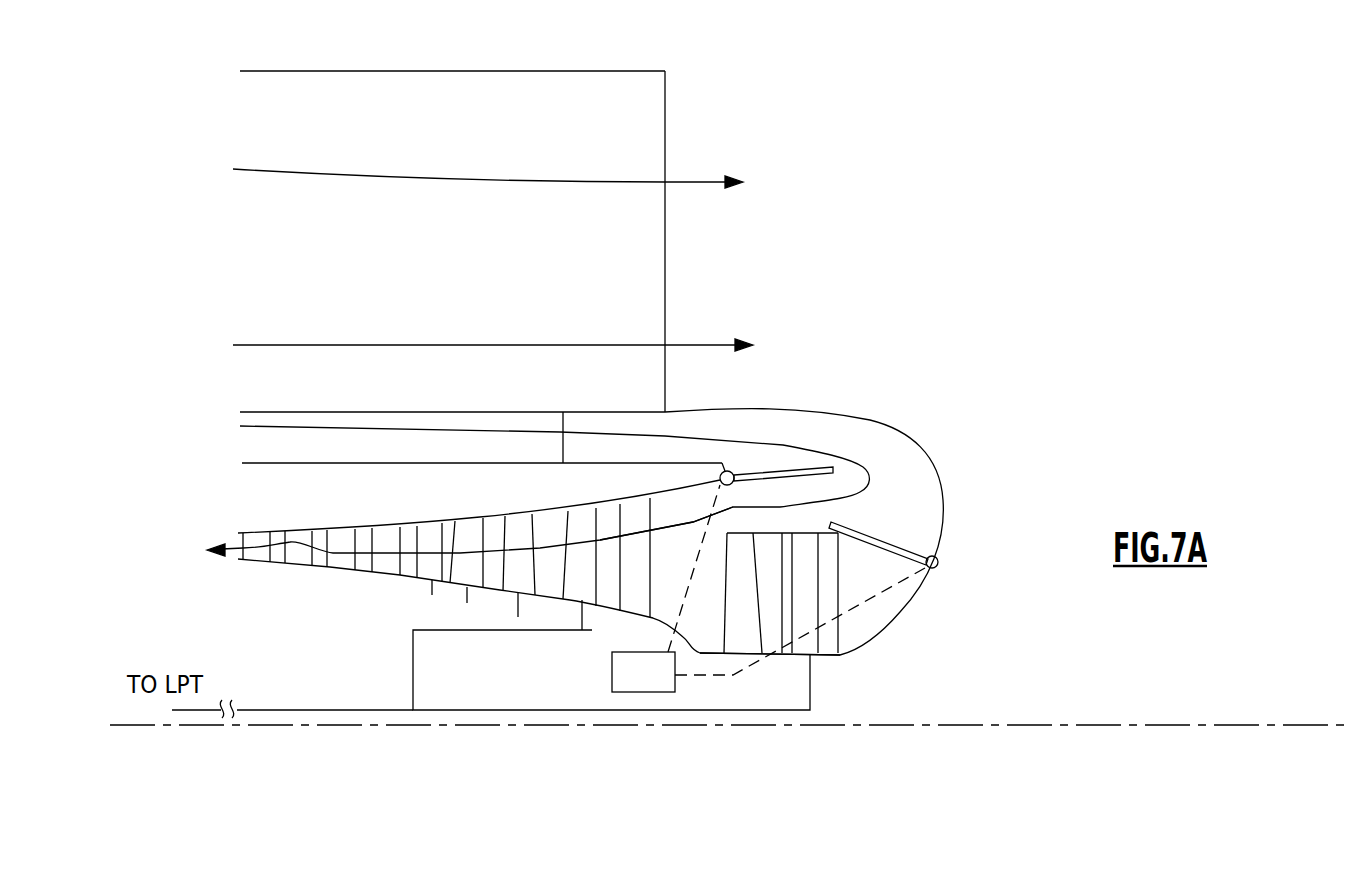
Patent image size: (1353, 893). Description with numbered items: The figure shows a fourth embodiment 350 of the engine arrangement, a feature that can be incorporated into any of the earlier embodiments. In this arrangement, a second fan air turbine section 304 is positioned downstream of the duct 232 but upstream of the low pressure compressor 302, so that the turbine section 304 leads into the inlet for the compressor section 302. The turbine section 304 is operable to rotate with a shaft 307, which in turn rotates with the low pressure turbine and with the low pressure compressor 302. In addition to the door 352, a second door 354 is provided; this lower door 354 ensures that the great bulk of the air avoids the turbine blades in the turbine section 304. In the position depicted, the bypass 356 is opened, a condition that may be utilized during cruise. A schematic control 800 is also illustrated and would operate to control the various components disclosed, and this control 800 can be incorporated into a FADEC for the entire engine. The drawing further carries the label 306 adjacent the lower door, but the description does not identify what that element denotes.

The fourth embodiment 350 is at (642, 444).
The duct 232 is at (863, 443).
The door 352 is at (778, 468).
The bypass 356 is at (693, 522).
The cascade vanes 306 is at (777, 533).
The second door 354 is at (890, 543).
The low pressure compressor 302 is at (428, 568).
The shaft 307 is at (522, 710).
The schematic control 800 is at (667, 686).
The second fan air turbine section 304 is at (820, 643).